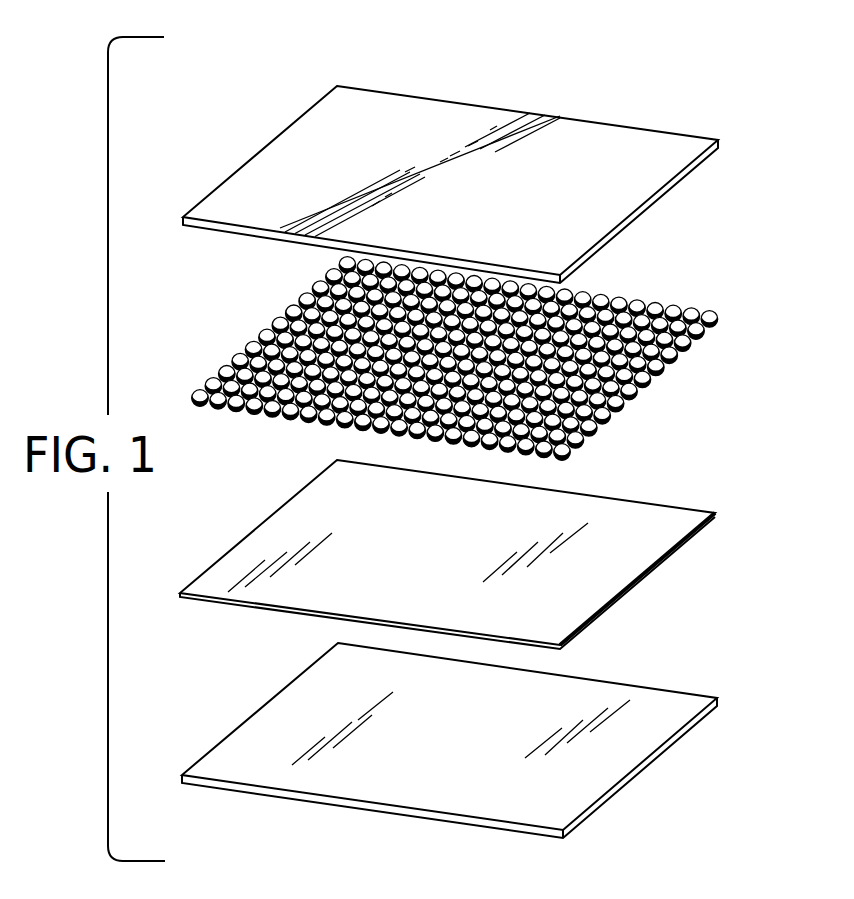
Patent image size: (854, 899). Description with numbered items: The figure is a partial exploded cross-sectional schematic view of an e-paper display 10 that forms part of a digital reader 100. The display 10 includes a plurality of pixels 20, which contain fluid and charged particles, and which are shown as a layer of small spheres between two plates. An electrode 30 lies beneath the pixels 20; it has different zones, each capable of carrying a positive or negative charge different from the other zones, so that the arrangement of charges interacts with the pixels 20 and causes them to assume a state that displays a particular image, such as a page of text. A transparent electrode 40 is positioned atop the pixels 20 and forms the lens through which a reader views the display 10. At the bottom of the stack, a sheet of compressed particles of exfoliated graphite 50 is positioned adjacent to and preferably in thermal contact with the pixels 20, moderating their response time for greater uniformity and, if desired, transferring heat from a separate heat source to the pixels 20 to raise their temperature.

The digital reader 100 is at (695, 83).
The e-paper display 10 is at (708, 750).
The pixels 20 is at (747, 292).
The electrode 30 is at (617, 573).
The transparent electrode 40 is at (617, 205).
The sheet of compressed particles of exfoliated graphite 50 is at (480, 739).